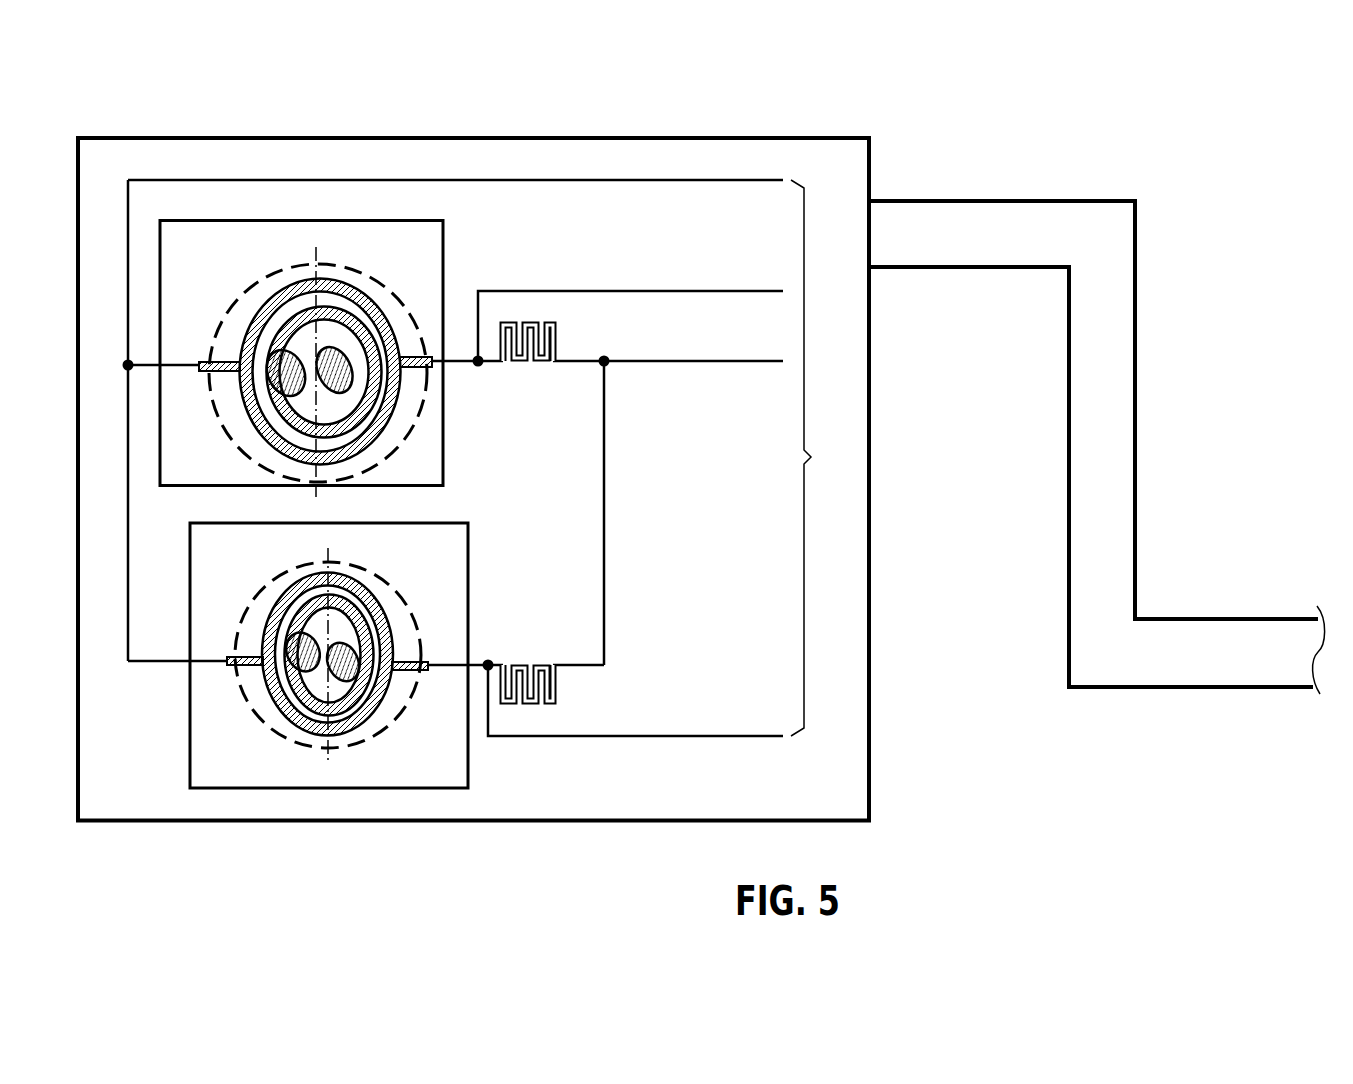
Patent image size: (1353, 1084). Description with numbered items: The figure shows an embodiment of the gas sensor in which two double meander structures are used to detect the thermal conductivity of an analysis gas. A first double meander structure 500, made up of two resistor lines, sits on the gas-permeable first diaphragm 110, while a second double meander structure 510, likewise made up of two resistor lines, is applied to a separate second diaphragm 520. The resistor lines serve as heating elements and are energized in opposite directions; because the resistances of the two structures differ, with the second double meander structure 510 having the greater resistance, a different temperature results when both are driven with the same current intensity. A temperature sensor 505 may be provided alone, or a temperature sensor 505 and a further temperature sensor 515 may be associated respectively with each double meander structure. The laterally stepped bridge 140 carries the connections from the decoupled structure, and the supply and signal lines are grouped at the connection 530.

The first diaphragm 110 is at (200, 753).
The bridge 140 is at (998, 218).
The first double meander structure 500 is at (367, 592).
The temperature sensor 505 is at (550, 681).
The second double meander structure 510 is at (360, 293).
The temperature sensor 515 is at (550, 338).
The second diaphragm 520 is at (202, 230).
The evaluation circuit connection 530 is at (802, 443).